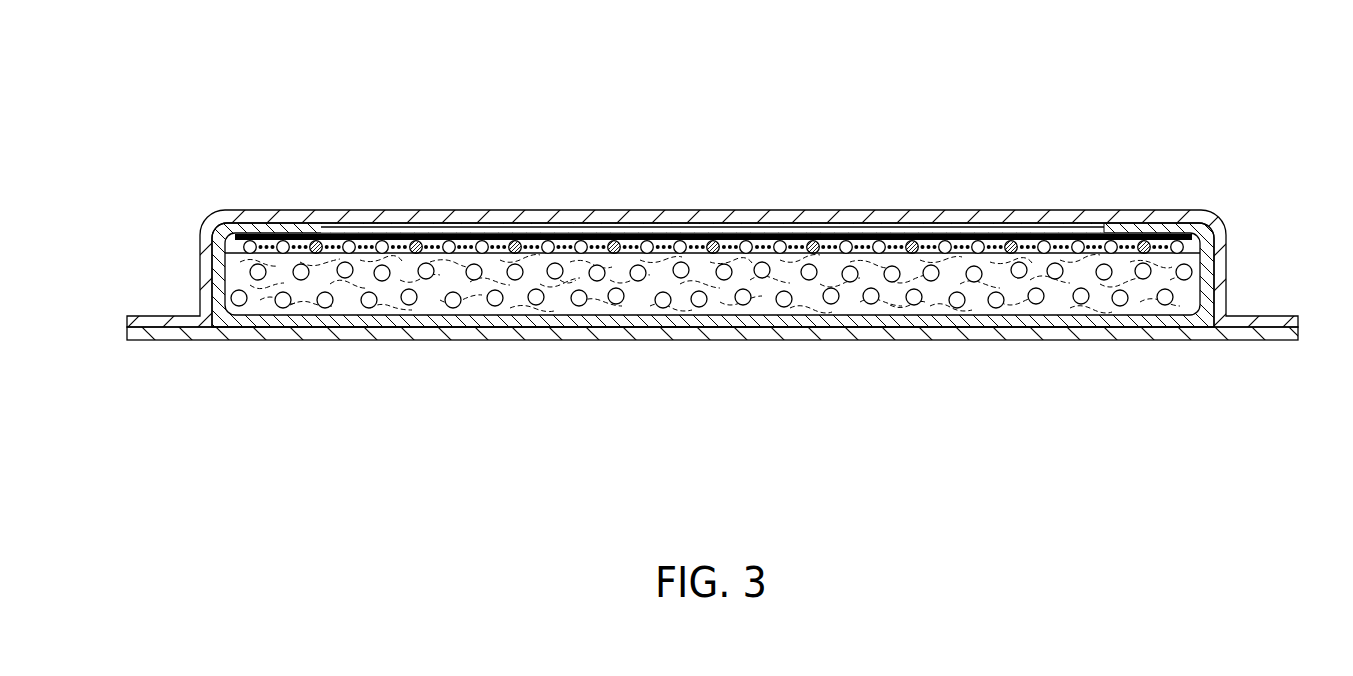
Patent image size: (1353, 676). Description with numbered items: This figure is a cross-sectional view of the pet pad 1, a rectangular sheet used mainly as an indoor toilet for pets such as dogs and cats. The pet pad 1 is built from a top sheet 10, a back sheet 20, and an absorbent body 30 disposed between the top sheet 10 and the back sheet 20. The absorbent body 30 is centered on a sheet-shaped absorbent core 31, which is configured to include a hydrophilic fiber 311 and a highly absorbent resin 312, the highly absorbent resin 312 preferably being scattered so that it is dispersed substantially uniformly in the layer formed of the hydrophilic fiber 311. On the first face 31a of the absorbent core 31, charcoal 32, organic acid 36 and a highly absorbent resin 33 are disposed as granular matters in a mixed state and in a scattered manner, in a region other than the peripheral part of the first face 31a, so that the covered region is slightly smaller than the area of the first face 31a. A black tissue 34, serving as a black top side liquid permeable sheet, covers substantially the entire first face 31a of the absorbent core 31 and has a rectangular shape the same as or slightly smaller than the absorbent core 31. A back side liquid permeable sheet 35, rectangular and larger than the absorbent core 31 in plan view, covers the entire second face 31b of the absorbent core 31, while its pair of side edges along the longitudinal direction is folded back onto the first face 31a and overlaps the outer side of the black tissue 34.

The pet pad 1 is at (523, 110).
The top sheet 10 is at (260, 211).
The back sheet 20 is at (240, 341).
The absorbent body 30 is at (1155, 87).
The absorbent core 31 is at (780, 273).
The first face 31a is at (427, 240).
The second face 31b is at (435, 316).
The charcoal 32 is at (1173, 238).
The highly absorbent resin 33 is at (1198, 238).
The black tissue 34 is at (1143, 230).
The back side liquid permeable sheet 35 is at (1115, 226).
The organic acid 36 is at (1150, 243).
The hydrophilic fiber 311 is at (1180, 296).
The highly absorbent resin 312 is at (1185, 267).